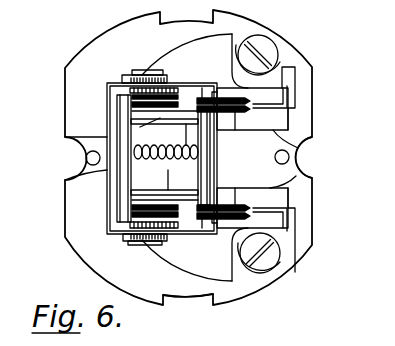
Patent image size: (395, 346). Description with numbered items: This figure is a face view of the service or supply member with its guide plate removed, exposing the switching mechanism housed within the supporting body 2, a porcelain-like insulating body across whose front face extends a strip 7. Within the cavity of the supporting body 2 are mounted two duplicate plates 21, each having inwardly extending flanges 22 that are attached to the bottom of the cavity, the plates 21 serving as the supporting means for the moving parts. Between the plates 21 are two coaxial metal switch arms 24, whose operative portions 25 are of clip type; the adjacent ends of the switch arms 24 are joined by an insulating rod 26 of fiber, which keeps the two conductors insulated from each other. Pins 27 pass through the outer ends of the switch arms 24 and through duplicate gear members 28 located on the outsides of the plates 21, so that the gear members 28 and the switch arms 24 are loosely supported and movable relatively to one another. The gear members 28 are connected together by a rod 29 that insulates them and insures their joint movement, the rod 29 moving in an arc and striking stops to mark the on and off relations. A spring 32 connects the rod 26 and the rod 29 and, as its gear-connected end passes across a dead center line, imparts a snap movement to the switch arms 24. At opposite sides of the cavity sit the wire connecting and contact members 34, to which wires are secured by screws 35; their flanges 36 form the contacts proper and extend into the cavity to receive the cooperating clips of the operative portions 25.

The supporting body 2 is at (235, 297).
The strip 7 is at (108, 236).
The plates 21 is at (174, 95).
The inwardly extending flanges 22 is at (76, 158).
The switch arms 24 is at (203, 92).
The operative portions 25 is at (240, 113).
The rod 26 is at (192, 287).
The pins 27 is at (143, 75).
The gear members 28 is at (108, 90).
The rod 29 is at (105, 190).
The spring 32 is at (175, 162).
The wire connecting and contact members 34 is at (290, 58).
The screws 35 is at (262, 50).
The flanges 36 is at (312, 138).